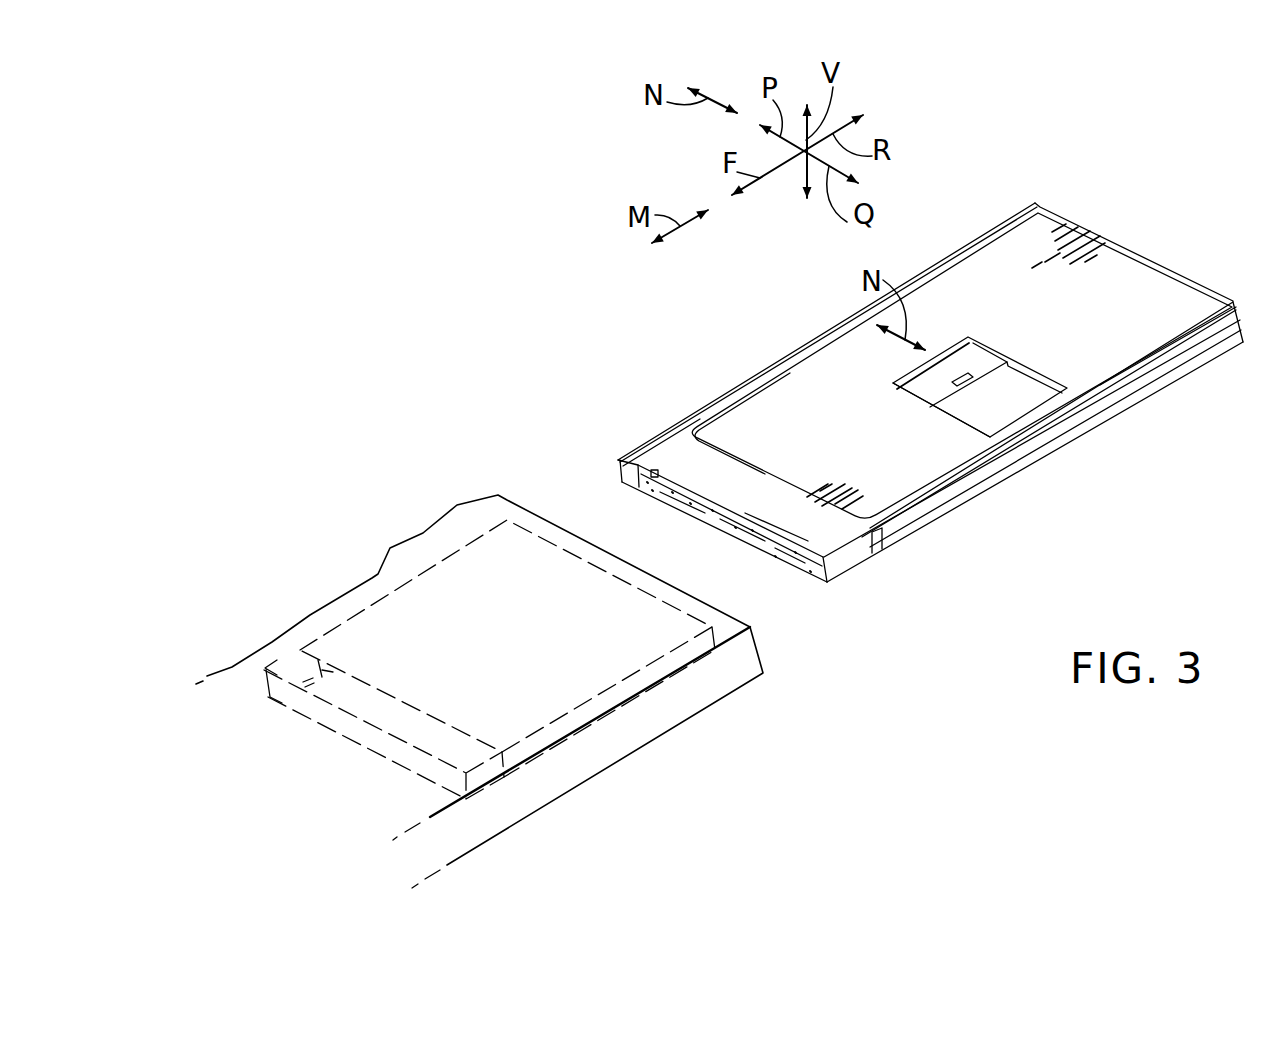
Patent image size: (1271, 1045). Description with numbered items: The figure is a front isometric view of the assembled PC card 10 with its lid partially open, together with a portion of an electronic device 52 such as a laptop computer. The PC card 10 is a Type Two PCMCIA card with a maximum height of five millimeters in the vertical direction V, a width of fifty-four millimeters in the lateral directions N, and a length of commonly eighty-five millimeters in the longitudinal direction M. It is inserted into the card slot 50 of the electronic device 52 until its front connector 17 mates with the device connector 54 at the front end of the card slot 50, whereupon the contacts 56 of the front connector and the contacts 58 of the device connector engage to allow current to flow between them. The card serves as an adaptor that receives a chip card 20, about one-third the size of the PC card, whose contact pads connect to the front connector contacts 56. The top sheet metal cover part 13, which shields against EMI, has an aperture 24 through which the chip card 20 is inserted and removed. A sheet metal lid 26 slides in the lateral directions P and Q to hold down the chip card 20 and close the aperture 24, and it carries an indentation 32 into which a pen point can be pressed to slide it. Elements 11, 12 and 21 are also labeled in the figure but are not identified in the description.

The PC card 10 is at (957, 210).
The leading edge 11 is at (795, 328).
The frame 12 is at (928, 527).
The top sheet metal cover part 13 is at (1100, 268).
The front connector 17 is at (788, 563).
The chip card 20 is at (1042, 397).
The hinge axis 21 is at (1053, 366).
The aperture 24 is at (1032, 378).
The sheet metal lid 26 is at (935, 390).
The indentation 32 is at (967, 377).
The card slot 50 is at (568, 555).
The electronic device 52 is at (727, 703).
The device connector 54 is at (272, 660).
The contacts 56 is at (670, 463).
The contacts 58 is at (318, 660).